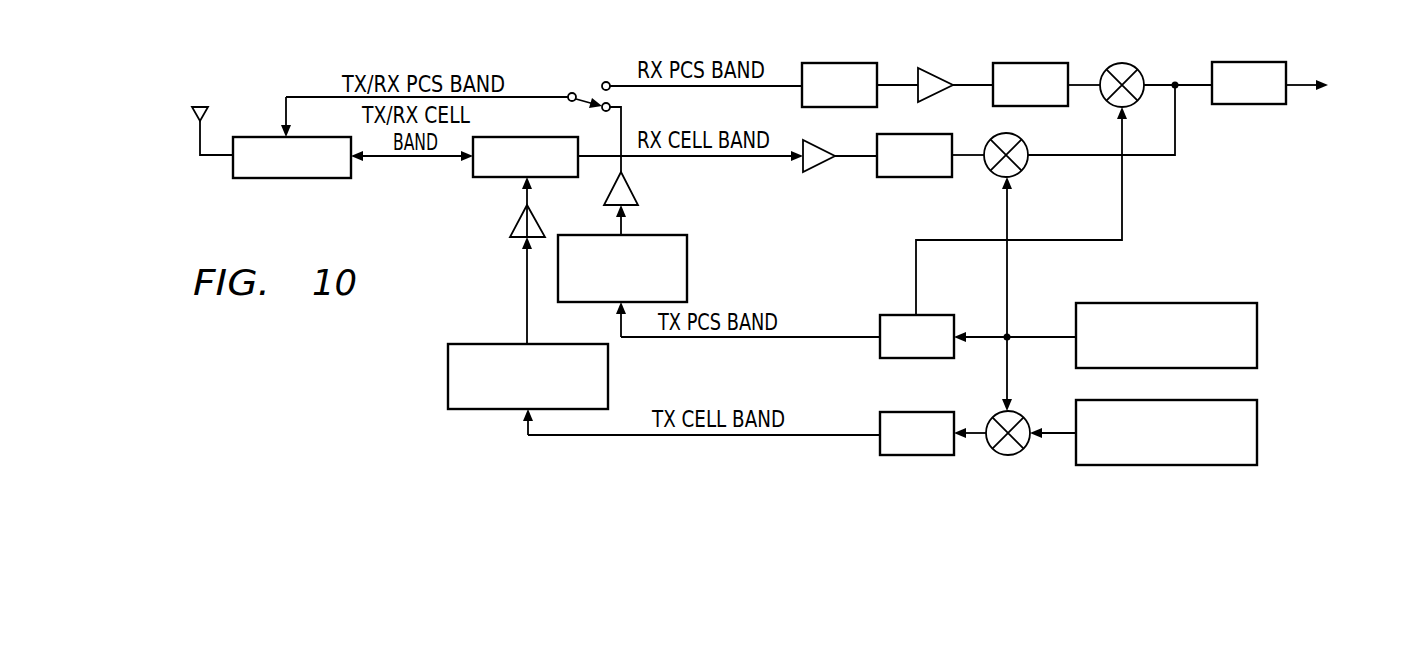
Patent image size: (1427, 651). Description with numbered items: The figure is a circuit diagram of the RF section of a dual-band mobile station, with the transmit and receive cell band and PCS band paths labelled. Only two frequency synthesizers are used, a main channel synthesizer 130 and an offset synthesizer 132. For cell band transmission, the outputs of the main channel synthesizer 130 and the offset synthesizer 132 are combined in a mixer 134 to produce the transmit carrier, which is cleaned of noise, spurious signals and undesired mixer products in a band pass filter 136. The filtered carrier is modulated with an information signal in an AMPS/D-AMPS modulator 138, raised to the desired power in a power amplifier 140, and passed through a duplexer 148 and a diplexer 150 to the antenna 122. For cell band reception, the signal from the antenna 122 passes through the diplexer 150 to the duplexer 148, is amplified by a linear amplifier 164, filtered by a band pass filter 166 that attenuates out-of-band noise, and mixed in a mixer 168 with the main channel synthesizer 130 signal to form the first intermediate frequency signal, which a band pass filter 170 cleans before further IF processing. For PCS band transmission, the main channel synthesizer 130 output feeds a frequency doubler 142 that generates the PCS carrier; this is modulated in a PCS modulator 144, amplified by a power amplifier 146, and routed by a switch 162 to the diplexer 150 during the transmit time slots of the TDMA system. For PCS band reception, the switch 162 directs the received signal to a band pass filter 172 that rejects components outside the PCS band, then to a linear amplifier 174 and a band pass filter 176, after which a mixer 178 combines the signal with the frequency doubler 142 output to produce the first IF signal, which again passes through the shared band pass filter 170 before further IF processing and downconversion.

The antenna 122 is at (198, 131).
The diplexer 150 is at (265, 136).
The duplexer 148 is at (472, 170).
The switch 162 is at (587, 97).
The power amplifier 146 is at (634, 184).
The power amplifier 140 is at (512, 223).
The PCS modulator 144 is at (687, 265).
The AMPS/D-AMPS modulator 138 is at (448, 375).
The frequency doubler 142 is at (880, 348).
The band pass filter 136 is at (880, 446).
The mixer 134 is at (1021, 413).
The main channel synthesizer 130 is at (1257, 330).
The offset synthesizer 132 is at (1257, 428).
The linear amplifier 164 is at (823, 168).
The band pass filter 166 is at (918, 177).
The mixer 168 is at (1022, 168).
The band pass filter 172 is at (840, 62).
The linear amplifier 174 is at (933, 72).
The band pass filter 176 is at (1033, 62).
The mixer 178 is at (1123, 63).
The band pass filter 170 is at (1253, 62).